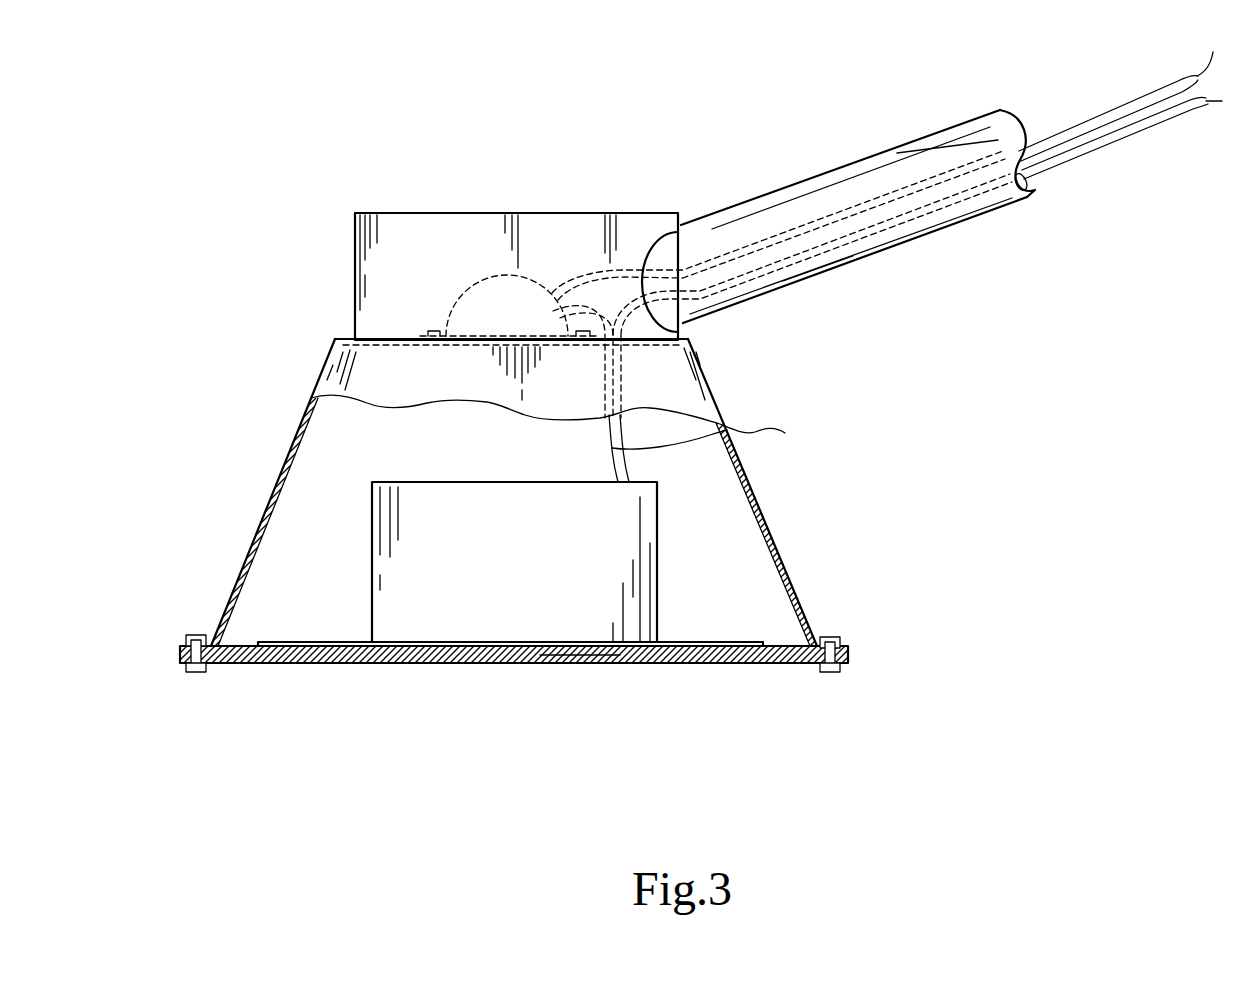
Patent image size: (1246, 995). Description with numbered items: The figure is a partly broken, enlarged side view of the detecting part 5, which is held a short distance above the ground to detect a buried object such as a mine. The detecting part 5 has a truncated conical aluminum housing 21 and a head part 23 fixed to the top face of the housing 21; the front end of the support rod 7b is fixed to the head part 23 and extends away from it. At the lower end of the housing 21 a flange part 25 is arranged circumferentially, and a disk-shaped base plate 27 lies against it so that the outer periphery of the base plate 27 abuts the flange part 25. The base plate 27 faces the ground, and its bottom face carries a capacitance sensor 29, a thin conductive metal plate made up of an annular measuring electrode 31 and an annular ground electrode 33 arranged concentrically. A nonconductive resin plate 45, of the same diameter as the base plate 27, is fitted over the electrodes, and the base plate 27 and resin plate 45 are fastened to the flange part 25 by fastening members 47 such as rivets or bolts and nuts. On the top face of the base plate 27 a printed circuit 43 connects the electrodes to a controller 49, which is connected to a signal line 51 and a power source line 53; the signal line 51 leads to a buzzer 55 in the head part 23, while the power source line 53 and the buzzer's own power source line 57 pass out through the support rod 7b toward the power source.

The detecting part 5 is at (377, 156).
The support rod 7b is at (913, 141).
The housing 21 is at (757, 485).
The head part 23 is at (575, 212).
The flange part 25 is at (848, 650).
The base plate 27 is at (780, 645).
The capacitance sensor 29 is at (740, 668).
The measuring electrode 31 is at (290, 665).
The ground electrode 33 is at (367, 665).
The circuit 43 is at (565, 668).
The resin plate 45 is at (530, 668).
The fastening members 47 is at (198, 634).
The controller 49 is at (372, 518).
The signal line 51 is at (612, 448).
The power source line 53 is at (567, 424).
The buzzer 55 is at (497, 270).
The power source line 57 is at (628, 268).